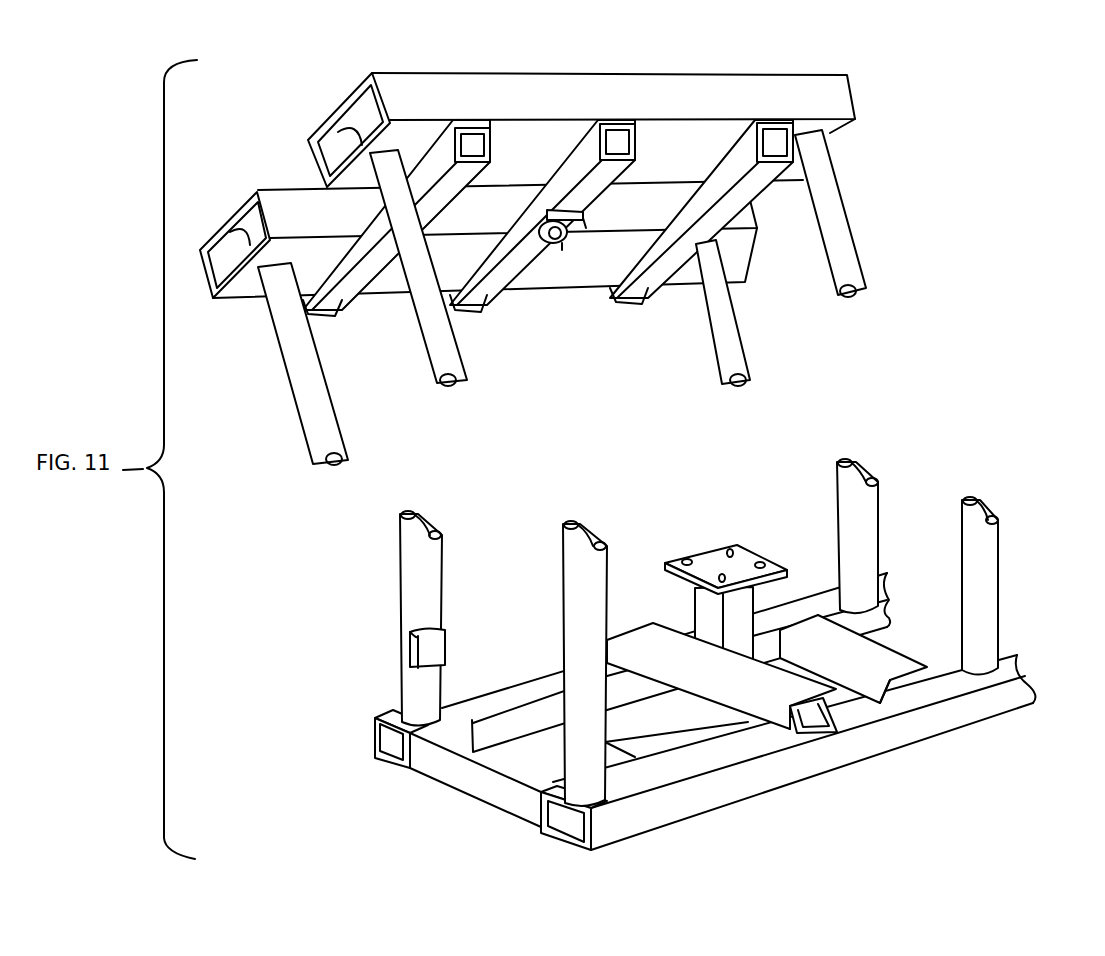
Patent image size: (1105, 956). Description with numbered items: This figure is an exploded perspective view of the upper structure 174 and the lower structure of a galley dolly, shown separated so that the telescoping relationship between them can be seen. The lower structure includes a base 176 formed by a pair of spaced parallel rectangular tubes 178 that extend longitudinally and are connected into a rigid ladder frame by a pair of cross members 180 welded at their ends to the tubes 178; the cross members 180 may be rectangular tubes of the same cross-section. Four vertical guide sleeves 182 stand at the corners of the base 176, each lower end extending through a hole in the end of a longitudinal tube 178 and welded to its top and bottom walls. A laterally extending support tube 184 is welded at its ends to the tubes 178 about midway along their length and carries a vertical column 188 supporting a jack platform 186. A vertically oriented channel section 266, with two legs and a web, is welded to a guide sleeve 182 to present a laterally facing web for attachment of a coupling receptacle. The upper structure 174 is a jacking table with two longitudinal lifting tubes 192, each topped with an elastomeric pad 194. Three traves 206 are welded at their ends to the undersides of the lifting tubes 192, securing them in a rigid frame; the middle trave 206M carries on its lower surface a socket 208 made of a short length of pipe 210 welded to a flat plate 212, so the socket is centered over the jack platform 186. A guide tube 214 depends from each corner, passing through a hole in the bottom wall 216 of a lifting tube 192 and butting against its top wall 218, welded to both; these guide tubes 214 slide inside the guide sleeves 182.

The upper structure 174 is at (880, 135).
The base 176 is at (420, 808).
The rectangular tubes 178 is at (530, 628).
The cross members 180 is at (535, 768).
The vertical guide sleeves 182 is at (990, 584).
The support tube 184 is at (643, 637).
The jack platform 186 is at (716, 560).
The vertical column 188 is at (748, 592).
The longitudinal lifting tubes 192 is at (607, 102).
The elastomeric pad 194 is at (222, 226).
The traves 206 is at (332, 297).
The middle trave 206M is at (478, 300).
The socket 208 is at (503, 239).
The pipe 210 is at (562, 244).
The flat plate 212 is at (580, 222).
The guide tubes 214 is at (842, 250).
The bottom wall 216 is at (424, 128).
The top wall 218 is at (345, 128).
The channel section 266 is at (425, 652).